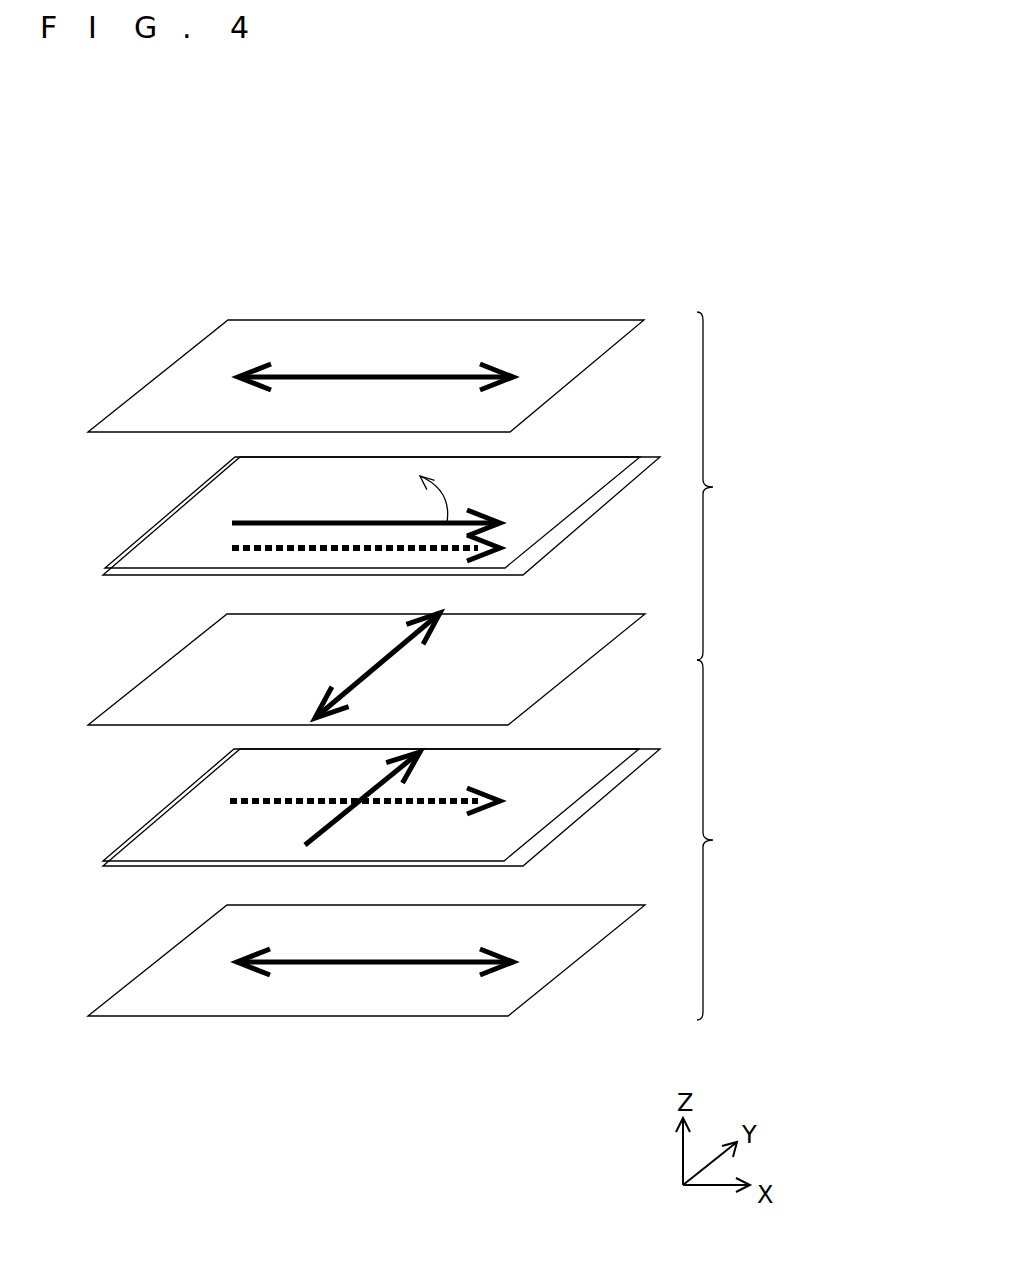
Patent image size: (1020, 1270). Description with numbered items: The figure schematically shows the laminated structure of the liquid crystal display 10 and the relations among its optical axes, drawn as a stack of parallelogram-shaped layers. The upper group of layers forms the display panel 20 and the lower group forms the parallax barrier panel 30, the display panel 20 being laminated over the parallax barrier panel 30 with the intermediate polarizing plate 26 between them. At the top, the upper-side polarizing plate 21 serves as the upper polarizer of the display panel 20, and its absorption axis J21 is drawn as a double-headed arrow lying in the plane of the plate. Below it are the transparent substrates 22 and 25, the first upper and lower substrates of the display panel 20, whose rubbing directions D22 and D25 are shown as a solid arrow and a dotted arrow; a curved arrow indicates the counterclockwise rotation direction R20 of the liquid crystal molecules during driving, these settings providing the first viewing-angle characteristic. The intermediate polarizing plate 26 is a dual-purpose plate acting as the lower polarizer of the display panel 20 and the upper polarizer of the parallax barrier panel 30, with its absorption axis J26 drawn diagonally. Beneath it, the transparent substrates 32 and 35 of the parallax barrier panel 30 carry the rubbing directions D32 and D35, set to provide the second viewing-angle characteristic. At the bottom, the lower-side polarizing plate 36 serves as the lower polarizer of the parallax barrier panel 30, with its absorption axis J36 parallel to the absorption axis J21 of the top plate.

The liquid crystal display 10 is at (650, 248).
The display panel 20 is at (722, 486).
The parallax barrier panel 30 is at (722, 840).
The upper-side polarizing plate 21 is at (583, 372).
The transparent substrate 22 is at (622, 456).
The transparent substrate 25 is at (632, 481).
The intermediate polarizing plate 26 is at (603, 648).
The transparent substrate 32 is at (626, 748).
The transparent substrate 35 is at (632, 779).
The lower-side polarizing plate 36 is at (580, 958).
The absorption axis J21 is at (345, 375).
The rotation direction R20 is at (447, 493).
The rubbing direction D22 is at (325, 521).
The rubbing direction D25 is at (337, 551).
The absorption axis J26 is at (377, 668).
The rubbing direction D32 is at (378, 788).
The rubbing direction D35 is at (385, 803).
The absorption axis J36 is at (340, 961).